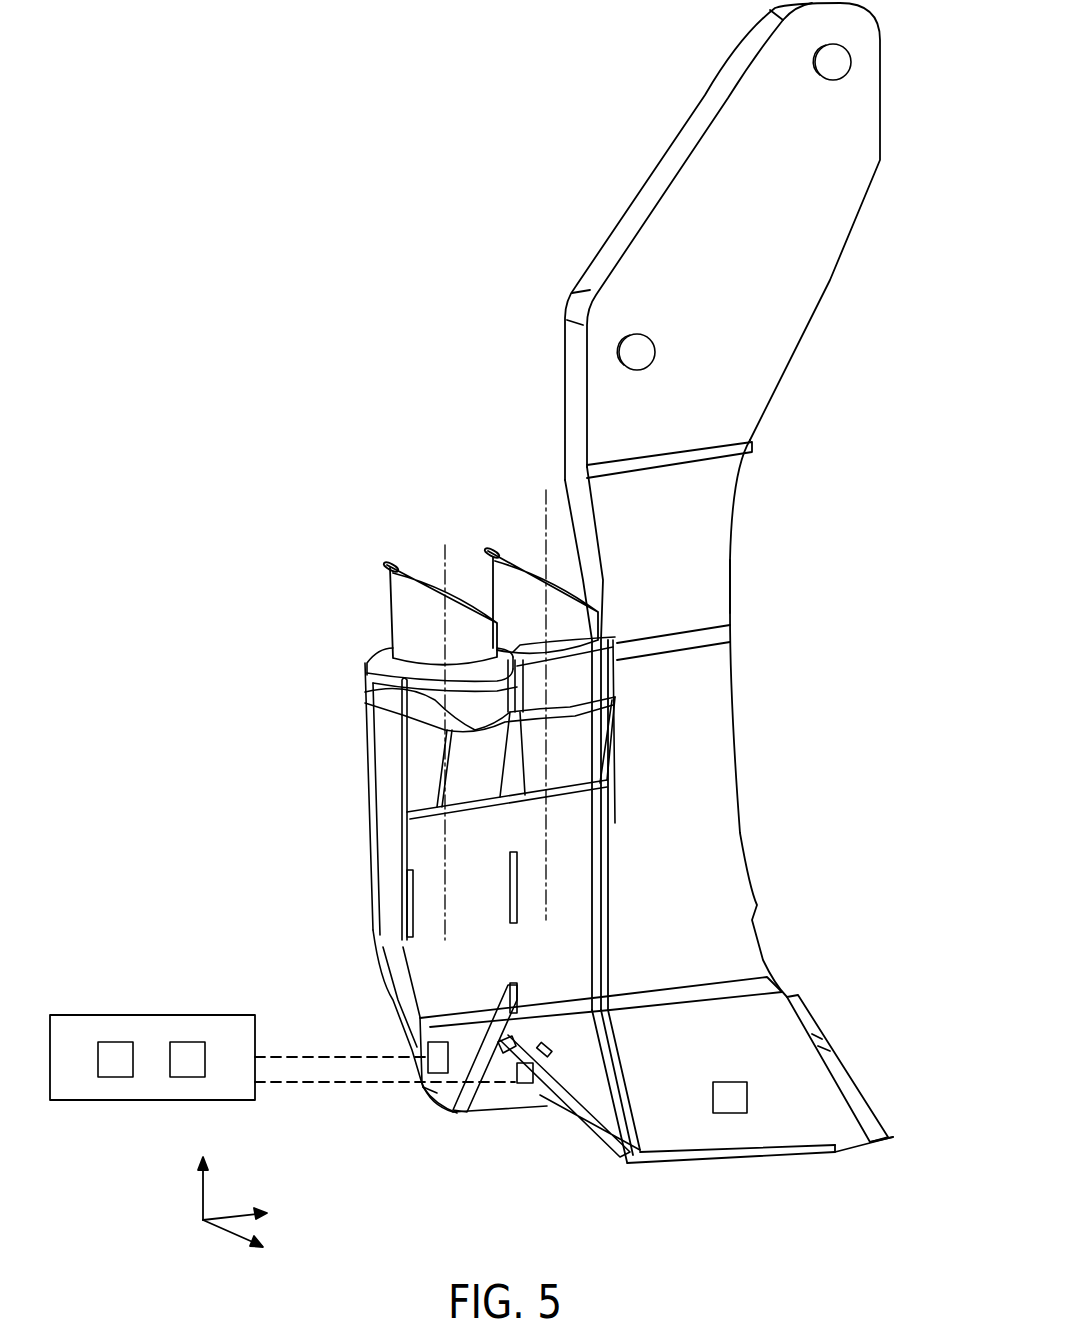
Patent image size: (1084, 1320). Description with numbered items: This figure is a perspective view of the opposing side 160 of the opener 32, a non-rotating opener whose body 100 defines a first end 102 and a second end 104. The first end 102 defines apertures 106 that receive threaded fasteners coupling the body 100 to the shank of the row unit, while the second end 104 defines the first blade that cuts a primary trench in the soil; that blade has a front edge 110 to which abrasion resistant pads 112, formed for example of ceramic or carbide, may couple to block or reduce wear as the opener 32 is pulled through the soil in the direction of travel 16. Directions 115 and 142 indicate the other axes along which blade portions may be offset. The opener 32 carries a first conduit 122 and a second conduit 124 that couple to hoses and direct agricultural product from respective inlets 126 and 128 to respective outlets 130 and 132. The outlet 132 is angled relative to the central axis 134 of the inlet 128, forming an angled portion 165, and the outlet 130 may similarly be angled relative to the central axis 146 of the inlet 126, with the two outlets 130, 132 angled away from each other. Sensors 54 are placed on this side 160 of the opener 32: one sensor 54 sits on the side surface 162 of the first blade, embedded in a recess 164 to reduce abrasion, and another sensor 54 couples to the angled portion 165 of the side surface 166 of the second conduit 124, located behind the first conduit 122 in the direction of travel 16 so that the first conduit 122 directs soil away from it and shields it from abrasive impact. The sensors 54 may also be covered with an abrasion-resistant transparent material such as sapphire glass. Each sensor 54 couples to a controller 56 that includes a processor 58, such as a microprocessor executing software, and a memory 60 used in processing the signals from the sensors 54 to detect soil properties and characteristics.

The direction of travel 16 is at (230, 1212).
The opener 32 is at (313, 307).
The sensors 54 is at (420, 1020).
The controller 56 is at (153, 1100).
The processor 58 is at (113, 1042).
The memory 60 is at (185, 1042).
The body 100 is at (720, 848).
The first end 102 is at (598, 89).
The second end 104 is at (657, 1179).
The apertures 106 is at (840, 70).
The front edge 110 is at (862, 1103).
The pads 112 is at (845, 1062).
The direction 115 is at (203, 1195).
The first conduit 122 is at (585, 742).
The second conduit 124 is at (453, 763).
The inlet 126 is at (510, 593).
The inlet 128 is at (405, 610).
The outlet 130 is at (575, 1112).
The outlet 132 is at (437, 1093).
The central axis 134 is at (443, 700).
The direction 142 is at (218, 1228).
The central axis 146 is at (545, 515).
The opposing side 160 is at (838, 737).
The side surface 162 is at (833, 1122).
The recess 164 is at (728, 1082).
The angled portion 165 is at (460, 1050).
The side surface 166 is at (448, 978).